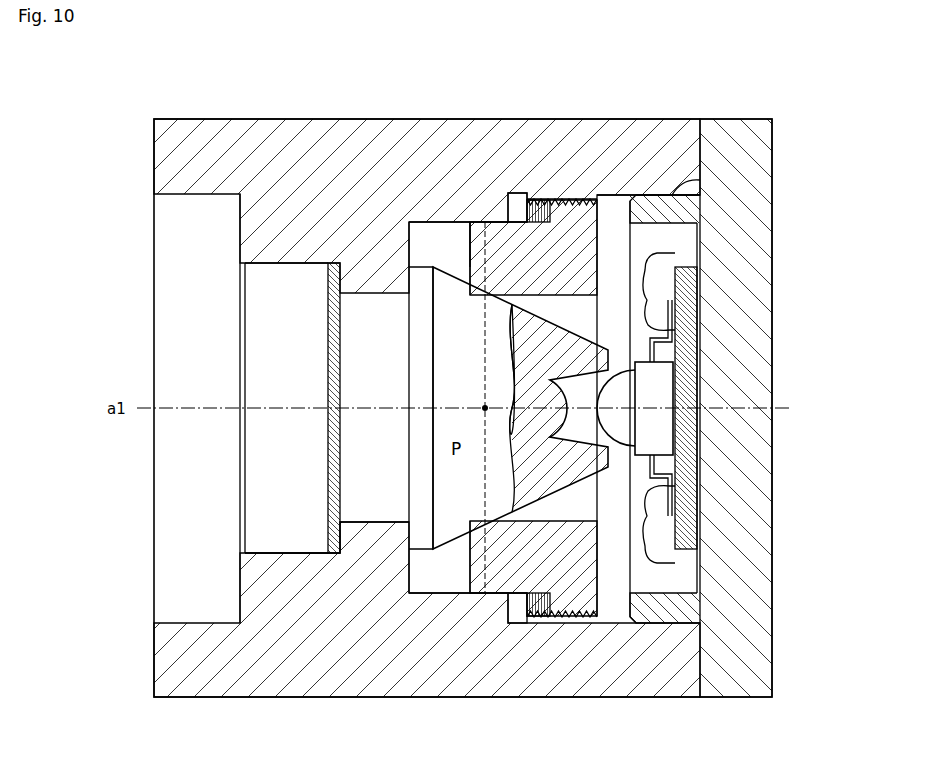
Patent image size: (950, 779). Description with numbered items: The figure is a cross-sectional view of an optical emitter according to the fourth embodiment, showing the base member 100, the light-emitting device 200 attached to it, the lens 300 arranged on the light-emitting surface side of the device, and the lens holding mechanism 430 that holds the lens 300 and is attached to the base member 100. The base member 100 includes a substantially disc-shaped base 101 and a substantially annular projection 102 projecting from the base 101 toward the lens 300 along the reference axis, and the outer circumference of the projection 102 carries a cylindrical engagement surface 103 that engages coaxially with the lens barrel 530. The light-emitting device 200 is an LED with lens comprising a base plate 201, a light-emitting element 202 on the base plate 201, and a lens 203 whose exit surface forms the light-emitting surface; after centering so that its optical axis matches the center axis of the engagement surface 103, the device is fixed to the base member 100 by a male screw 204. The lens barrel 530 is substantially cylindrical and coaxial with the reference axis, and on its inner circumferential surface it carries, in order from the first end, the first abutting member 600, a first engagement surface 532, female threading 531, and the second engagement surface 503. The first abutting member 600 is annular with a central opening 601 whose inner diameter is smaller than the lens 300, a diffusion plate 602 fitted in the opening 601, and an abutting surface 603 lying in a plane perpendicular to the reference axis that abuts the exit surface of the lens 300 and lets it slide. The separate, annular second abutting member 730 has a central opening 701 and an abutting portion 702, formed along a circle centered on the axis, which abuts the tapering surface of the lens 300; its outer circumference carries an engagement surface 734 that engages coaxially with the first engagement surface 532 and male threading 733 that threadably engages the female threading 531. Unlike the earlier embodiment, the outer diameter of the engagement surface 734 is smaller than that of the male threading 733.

The base member 100 is at (820, 283).
The base 101 is at (742, 152).
The projection 102 is at (657, 216).
The engagement surface 103 is at (666, 196).
The light-emitting device 200 is at (750, 408).
The base plate 201 is at (688, 348).
The light-emitting element 202 is at (657, 386).
The lens 203 is at (620, 423).
The male screw 204 is at (655, 540).
The lens 300 is at (460, 352).
The lens holding mechanism 430 is at (124, 307).
The second engagement surface 503 is at (643, 195).
The lens barrel 530 is at (332, 119).
The female threading 531 is at (580, 200).
The first engagement surface 532 is at (488, 224).
The first abutting member 600 is at (292, 647).
The opening 601 is at (352, 522).
The diffusion plate 602 is at (330, 460).
The abutting surface 603 is at (420, 575).
The opening 701 is at (577, 520).
The abutting portion 702 is at (460, 535).
The second abutting member 730 is at (600, 573).
The male threading 733 is at (572, 598).
The engagement surface 734 is at (484, 598).